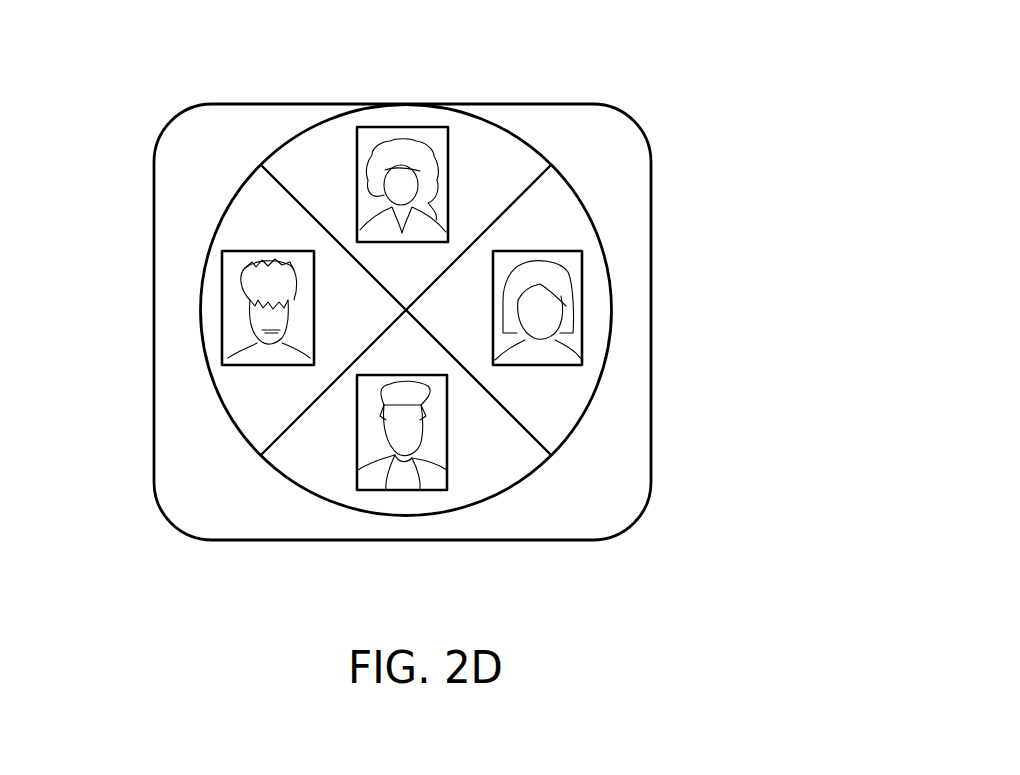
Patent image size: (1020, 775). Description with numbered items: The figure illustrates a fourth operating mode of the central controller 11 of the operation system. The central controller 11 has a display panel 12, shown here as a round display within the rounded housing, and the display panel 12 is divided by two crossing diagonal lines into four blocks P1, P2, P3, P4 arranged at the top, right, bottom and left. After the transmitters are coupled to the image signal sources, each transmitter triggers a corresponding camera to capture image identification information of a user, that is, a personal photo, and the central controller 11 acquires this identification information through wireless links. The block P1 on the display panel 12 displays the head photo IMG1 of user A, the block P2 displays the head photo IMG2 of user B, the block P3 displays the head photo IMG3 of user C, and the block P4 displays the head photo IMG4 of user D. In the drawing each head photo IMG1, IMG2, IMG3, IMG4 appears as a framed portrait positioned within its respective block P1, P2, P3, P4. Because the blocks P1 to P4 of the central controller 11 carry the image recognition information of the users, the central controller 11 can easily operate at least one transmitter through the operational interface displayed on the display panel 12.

The central controller 11 is at (750, 265).
The display panel 12 is at (240, 177).
The block P1 is at (502, 128).
The block P2 is at (587, 213).
The block P3 is at (500, 493).
The block P4 is at (221, 220).
The head photo IMG1 is at (407, 127).
The head photo IMG2 is at (560, 366).
The head photo IMG3 is at (403, 490).
The head photo IMG4 is at (247, 366).